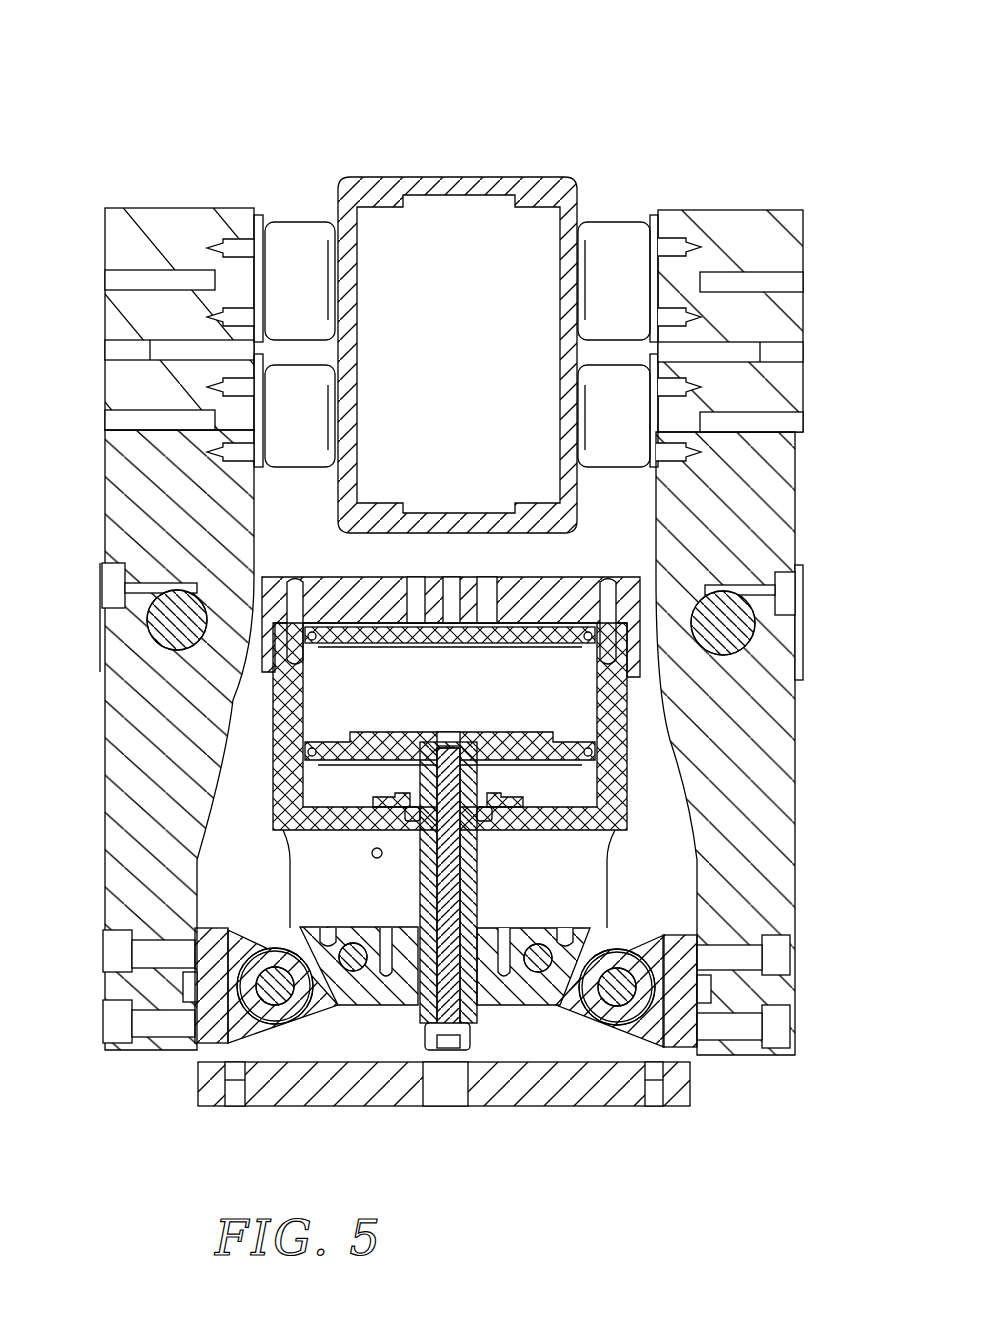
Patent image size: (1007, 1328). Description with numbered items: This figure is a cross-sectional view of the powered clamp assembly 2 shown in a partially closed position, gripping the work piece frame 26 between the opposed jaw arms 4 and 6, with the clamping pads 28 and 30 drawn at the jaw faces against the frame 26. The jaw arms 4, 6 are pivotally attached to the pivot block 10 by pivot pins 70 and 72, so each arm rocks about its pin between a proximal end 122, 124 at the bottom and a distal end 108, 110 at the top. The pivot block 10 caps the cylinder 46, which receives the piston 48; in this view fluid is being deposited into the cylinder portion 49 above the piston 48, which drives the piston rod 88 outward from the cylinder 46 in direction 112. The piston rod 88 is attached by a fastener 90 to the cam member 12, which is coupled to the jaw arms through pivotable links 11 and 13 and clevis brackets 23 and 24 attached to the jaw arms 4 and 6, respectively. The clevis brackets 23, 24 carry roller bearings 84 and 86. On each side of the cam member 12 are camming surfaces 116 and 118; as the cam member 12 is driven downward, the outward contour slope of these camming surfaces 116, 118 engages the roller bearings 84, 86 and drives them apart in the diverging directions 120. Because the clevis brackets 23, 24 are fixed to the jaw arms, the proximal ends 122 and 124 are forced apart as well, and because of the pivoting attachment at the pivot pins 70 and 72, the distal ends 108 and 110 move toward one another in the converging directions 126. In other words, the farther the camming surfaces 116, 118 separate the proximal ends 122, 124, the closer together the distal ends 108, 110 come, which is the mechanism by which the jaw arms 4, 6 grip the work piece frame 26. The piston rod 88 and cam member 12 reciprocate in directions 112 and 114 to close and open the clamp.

The powered clamp assembly 2 is at (476, 176).
The jaw arm 4 is at (245, 515).
The jaw arm 6 is at (799, 392).
The pivot block 10 is at (575, 580).
The link 11 is at (272, 1010).
The cam member 12 is at (300, 920).
The link 13 is at (608, 950).
The clevis bracket 23 is at (243, 930).
The clevis bracket 24 is at (626, 1085).
The work piece frame 26 is at (547, 180).
The left clamp pad 28 is at (300, 222).
The right clamp pad 30 is at (622, 222).
The cylinder 46 is at (345, 668).
The piston 48 is at (392, 755).
The cylinder portion 49 is at (556, 706).
The pivot pin 70 is at (172, 620).
The pivot pin 72 is at (735, 625).
The roller bearing 84 is at (275, 1010).
The roller bearing 86 is at (622, 962).
The piston rod 88 is at (428, 896).
The fastener 90 is at (468, 1046).
The distal end 108 is at (170, 225).
The distal end 110 is at (718, 220).
The direction 112 is at (532, 884).
The direction 114 is at (522, 842).
The camming surface 116 is at (365, 1008).
The camming surface 118 is at (555, 1005).
The diverging directions 120 is at (430, 1132).
The proximal end 122 is at (157, 1050).
The proximal end 124 is at (745, 1055).
The converging directions 126 is at (368, 40).